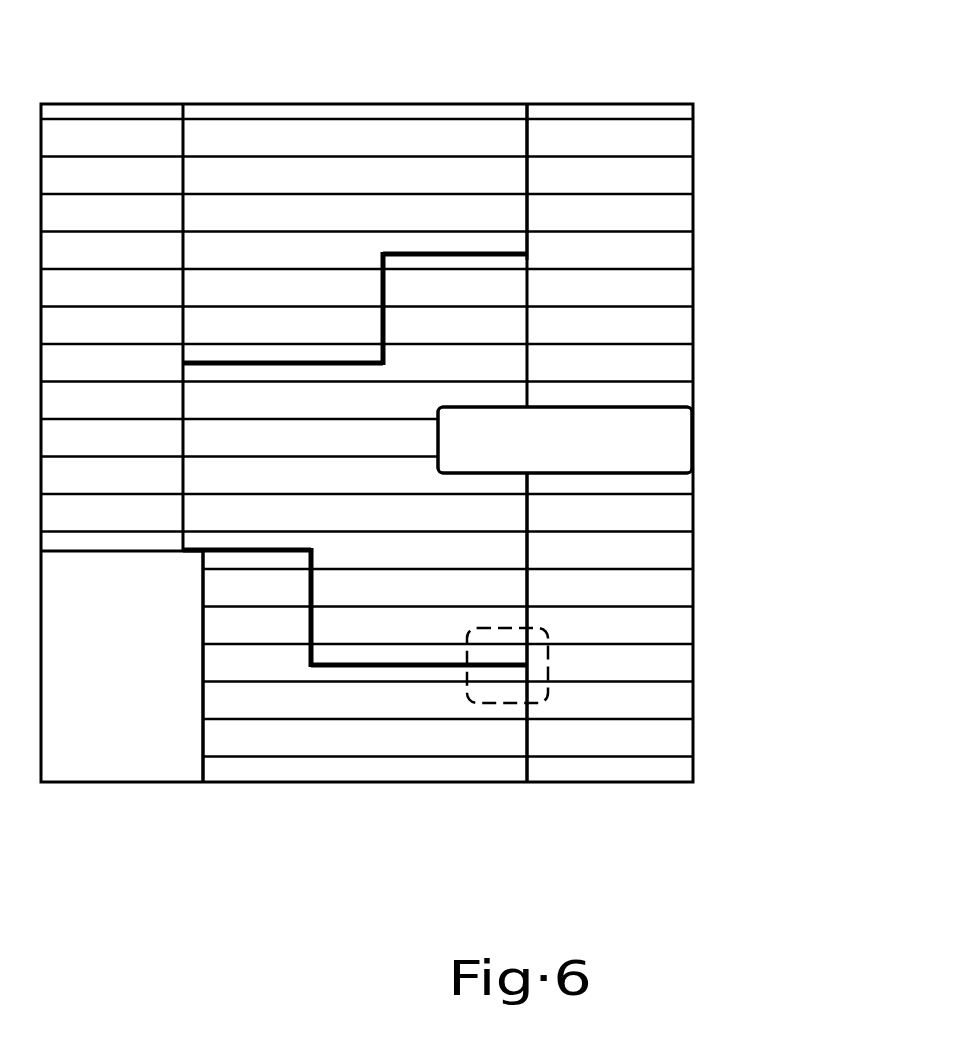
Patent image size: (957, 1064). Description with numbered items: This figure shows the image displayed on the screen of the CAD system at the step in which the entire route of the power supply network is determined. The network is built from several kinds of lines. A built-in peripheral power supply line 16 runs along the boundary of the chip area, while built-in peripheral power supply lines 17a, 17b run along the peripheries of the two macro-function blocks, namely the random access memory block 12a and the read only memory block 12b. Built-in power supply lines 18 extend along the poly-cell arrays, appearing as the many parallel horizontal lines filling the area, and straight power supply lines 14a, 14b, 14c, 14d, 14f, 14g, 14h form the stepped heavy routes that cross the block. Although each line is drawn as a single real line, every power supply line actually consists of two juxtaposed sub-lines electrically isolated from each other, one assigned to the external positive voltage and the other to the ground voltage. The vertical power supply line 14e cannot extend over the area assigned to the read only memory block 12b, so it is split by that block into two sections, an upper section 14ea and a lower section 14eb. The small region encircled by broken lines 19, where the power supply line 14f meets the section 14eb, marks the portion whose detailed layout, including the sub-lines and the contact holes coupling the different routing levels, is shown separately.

The random access memory block 12a is at (78, 760).
The read only memory block 12b is at (665, 460).
The straight power supply line 14a is at (183, 137).
The straight power supply line 14b is at (286, 362).
The straight power supply line 14c is at (383, 279).
The straight power supply line 14d is at (443, 253).
The straight power supply line 14e is at (531, 146).
The section of power supply line 14ea is at (527, 186).
The section of power supply line 14eb is at (527, 556).
The straight power supply line 14f is at (418, 667).
The straight power supply line 14g is at (306, 628).
The straight power supply line 14h is at (250, 556).
The built-in peripheral power supply line 16 is at (648, 104).
The built-in peripheral power supply line 17a is at (203, 700).
The built-in peripheral power supply line 17b is at (690, 433).
The built-in power supply lines 18 is at (657, 157).
The broken lines 19 is at (548, 690).